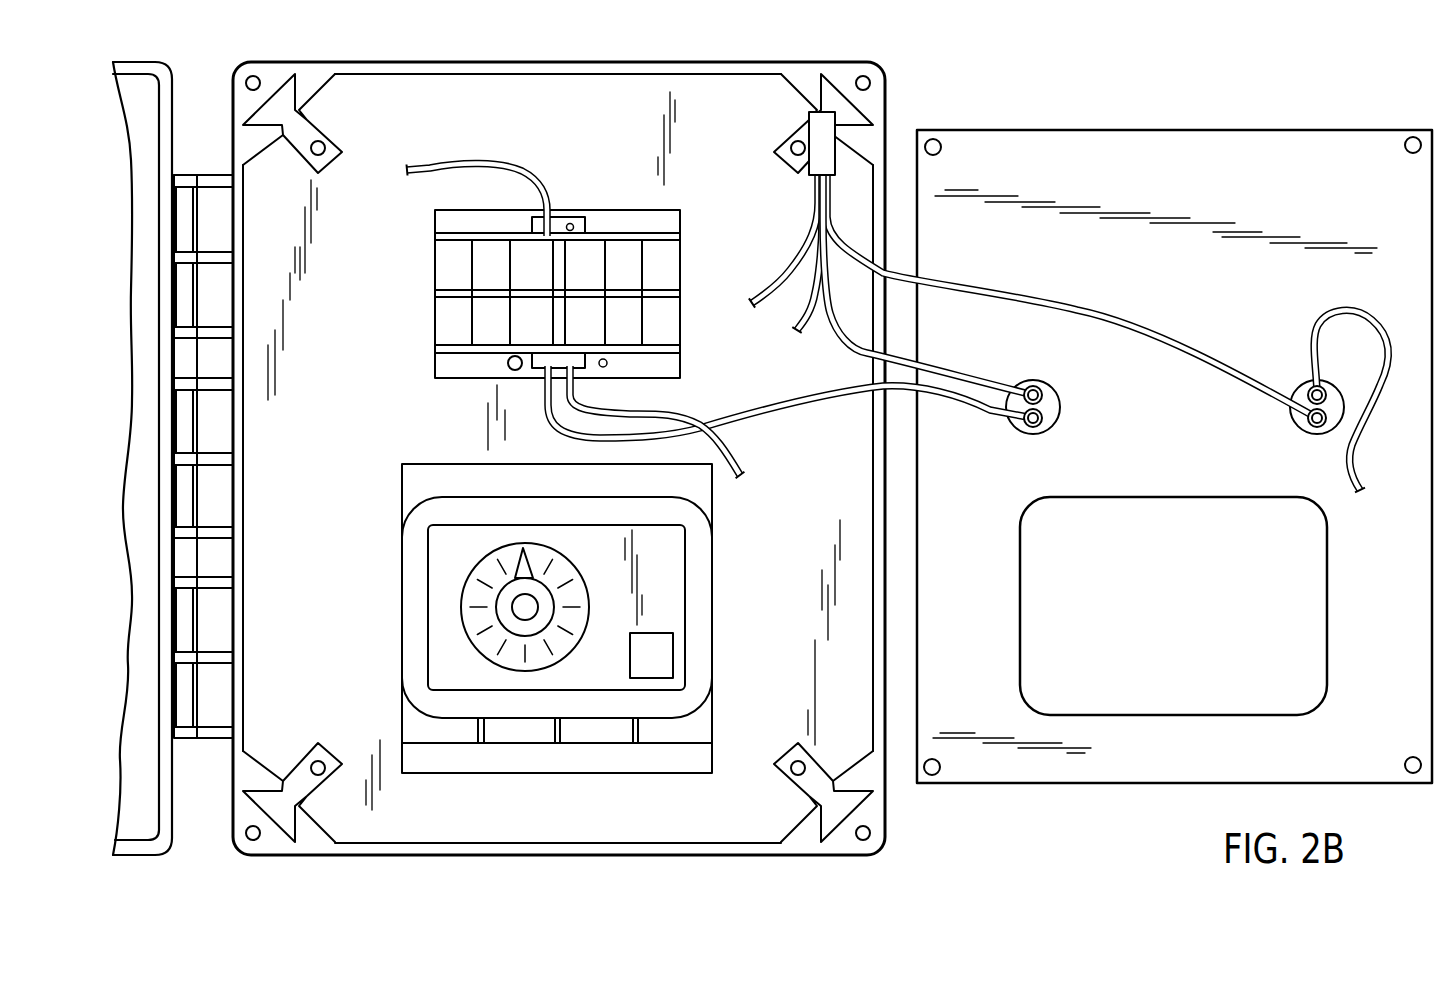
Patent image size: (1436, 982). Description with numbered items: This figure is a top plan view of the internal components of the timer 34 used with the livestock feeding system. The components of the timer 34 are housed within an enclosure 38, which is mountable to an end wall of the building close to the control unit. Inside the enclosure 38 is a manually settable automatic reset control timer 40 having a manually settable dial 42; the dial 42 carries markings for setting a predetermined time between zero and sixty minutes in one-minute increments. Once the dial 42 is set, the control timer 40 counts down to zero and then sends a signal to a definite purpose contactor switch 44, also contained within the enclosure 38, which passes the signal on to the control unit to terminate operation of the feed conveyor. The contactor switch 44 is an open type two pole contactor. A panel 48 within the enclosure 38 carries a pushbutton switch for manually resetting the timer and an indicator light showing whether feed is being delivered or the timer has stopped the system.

The timer 34 is at (668, 72).
The enclosure 38 is at (848, 844).
The control timer 40 is at (557, 634).
The dial 42 is at (513, 657).
The definite purpose contactor switch 44 is at (592, 252).
The panel 48 is at (1238, 150).